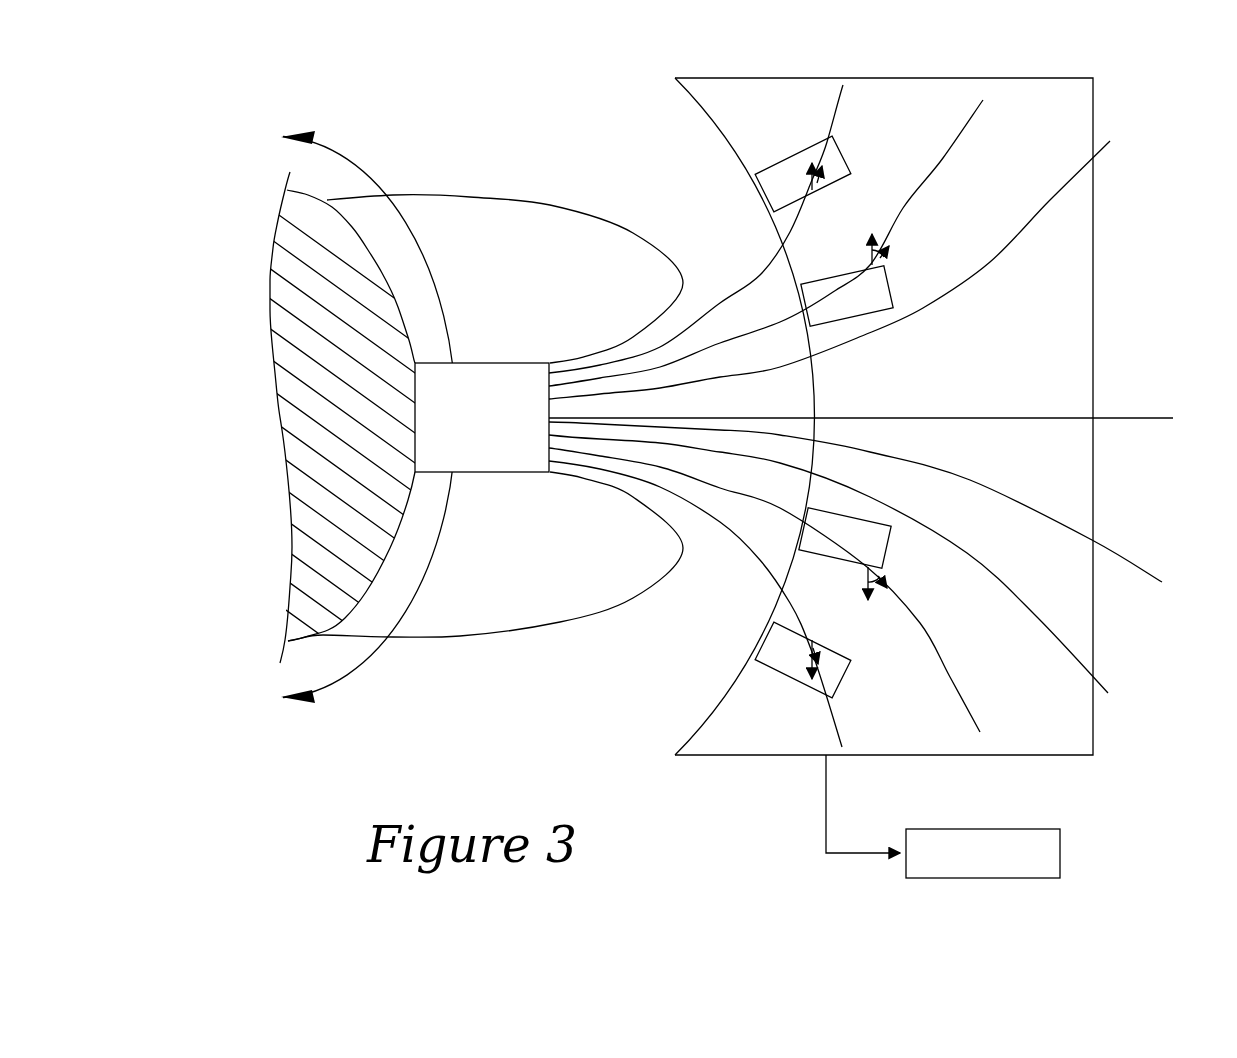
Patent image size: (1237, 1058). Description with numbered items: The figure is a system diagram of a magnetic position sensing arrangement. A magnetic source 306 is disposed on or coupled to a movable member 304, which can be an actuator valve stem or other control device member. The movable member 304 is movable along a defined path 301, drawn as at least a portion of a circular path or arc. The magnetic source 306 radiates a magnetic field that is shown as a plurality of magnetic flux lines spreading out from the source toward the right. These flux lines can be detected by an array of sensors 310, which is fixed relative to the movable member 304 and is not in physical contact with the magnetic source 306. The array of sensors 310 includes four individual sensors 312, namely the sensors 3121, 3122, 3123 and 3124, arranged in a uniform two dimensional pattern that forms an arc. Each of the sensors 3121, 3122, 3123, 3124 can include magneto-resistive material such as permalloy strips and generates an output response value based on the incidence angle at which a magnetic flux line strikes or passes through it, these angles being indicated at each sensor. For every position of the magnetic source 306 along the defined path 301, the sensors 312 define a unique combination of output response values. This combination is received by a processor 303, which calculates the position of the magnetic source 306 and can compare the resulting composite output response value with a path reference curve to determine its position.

The defined path 301 is at (360, 670).
The movable member 304 is at (297, 280).
The magnetic source 306 is at (532, 460).
The array of sensors 310 is at (1112, 296).
The sensors 312 is at (884, 419).
The first sensor 3121 is at (837, 670).
The second sensor 3122 is at (888, 540).
The third sensor 3123 is at (882, 275).
The fourth sensor 3124 is at (833, 158).
The processor 303 is at (960, 878).